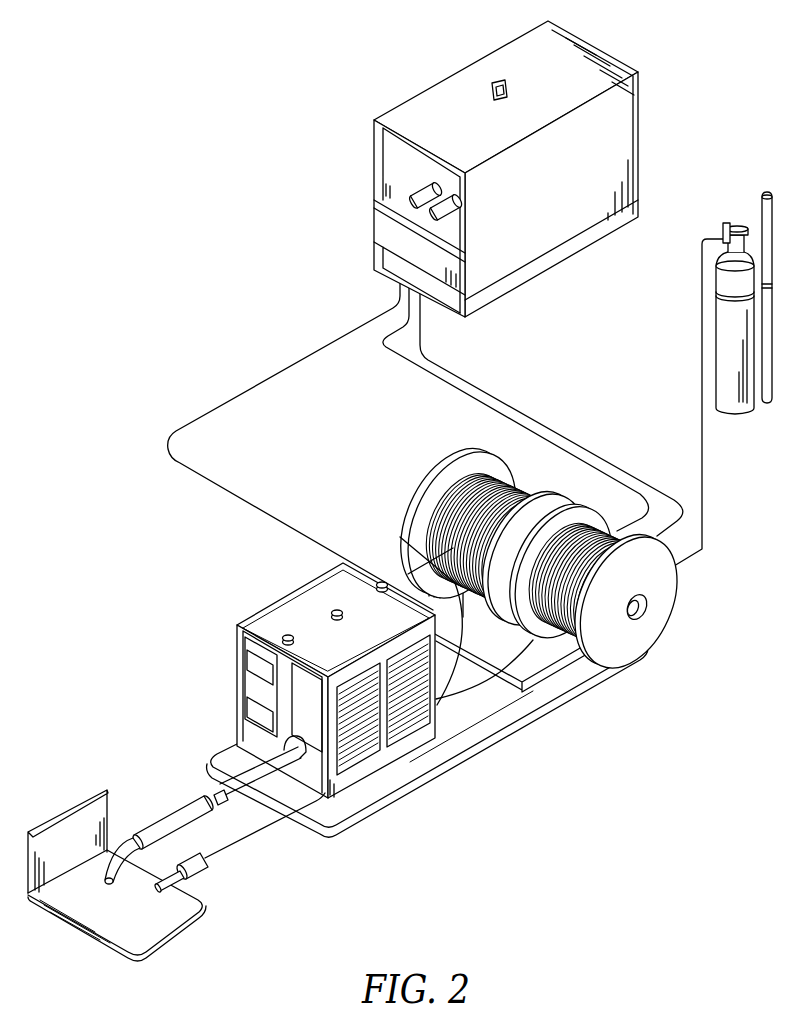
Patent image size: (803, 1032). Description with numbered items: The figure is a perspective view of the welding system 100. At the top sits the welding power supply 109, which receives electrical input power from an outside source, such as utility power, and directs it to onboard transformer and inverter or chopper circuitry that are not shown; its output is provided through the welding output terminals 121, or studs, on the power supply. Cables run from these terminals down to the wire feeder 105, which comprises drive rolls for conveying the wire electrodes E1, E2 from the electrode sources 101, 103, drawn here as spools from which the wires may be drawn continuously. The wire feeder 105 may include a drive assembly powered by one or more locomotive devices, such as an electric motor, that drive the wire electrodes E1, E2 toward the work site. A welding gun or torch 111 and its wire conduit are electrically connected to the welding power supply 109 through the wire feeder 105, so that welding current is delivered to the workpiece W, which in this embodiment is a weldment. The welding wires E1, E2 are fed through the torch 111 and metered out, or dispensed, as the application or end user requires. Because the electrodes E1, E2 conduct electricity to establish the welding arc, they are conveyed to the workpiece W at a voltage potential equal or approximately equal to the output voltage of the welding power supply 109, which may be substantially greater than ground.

The welding system 100 is at (96, 266).
The welding power supply 109 is at (638, 121).
The welding output terminals 121 is at (412, 197).
The electrode source 101 is at (428, 490).
The electrode source 103 is at (677, 601).
The wire electrode E1 is at (430, 560).
The wire electrode E2 is at (478, 688).
The wire feeder 105 is at (286, 603).
The welding torch 111 is at (168, 812).
The workpiece W is at (178, 921).